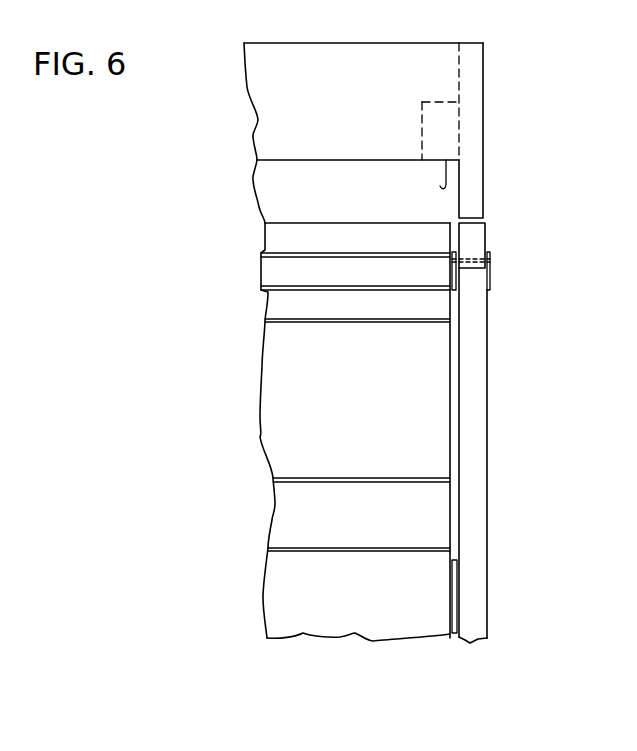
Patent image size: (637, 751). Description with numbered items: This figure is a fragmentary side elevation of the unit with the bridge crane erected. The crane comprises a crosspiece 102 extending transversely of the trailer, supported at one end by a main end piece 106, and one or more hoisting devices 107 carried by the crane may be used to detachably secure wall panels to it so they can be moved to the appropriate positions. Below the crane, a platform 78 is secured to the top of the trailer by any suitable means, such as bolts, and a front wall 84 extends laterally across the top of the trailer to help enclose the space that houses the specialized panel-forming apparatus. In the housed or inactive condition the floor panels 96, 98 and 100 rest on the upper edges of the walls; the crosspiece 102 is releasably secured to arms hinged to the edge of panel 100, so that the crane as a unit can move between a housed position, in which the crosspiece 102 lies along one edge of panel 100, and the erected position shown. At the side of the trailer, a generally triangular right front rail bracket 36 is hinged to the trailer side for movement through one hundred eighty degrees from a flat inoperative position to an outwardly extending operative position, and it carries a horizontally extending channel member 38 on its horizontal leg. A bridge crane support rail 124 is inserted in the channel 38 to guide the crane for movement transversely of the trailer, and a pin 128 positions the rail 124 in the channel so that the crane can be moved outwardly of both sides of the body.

The crosspiece 102 is at (322, 52).
The main end piece 106 is at (470, 89).
The hoisting device 107 is at (447, 133).
The floor panel 100 is at (300, 233).
The bridge crane support rail 124 is at (470, 233).
The pin 128 is at (488, 260).
The channel member 38 is at (490, 278).
The floor panel 98 is at (433, 277).
The floor panel 96 is at (362, 310).
The right front rail bracket 36 is at (473, 418).
The front wall 84 is at (432, 456).
The platform 78 is at (438, 523).